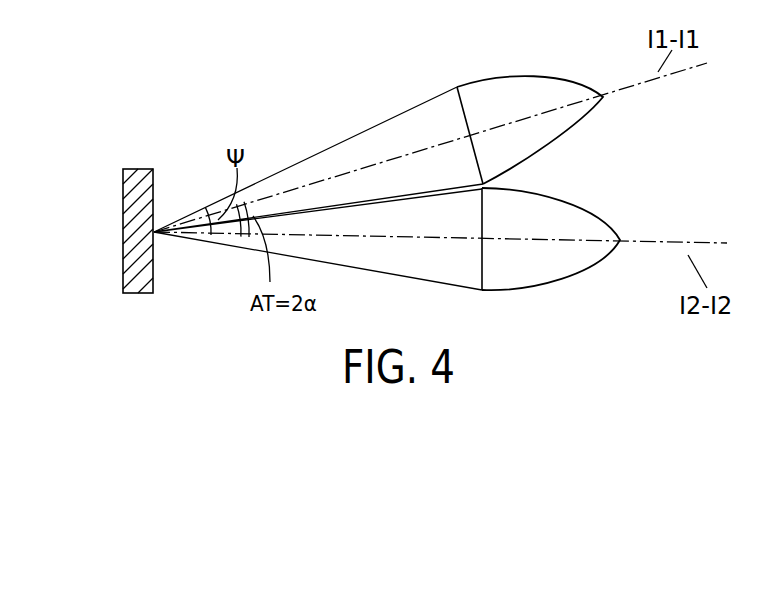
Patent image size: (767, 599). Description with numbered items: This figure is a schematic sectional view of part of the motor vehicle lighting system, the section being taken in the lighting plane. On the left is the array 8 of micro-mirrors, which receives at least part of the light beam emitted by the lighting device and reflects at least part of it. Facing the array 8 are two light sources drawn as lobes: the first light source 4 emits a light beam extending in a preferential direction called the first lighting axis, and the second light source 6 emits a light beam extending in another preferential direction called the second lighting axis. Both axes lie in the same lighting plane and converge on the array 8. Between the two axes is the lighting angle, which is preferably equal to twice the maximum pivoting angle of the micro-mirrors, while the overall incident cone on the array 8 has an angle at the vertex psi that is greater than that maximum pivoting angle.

The first light source 4 is at (522, 87).
The second light source 6 is at (545, 270).
The array of micro-mirrors 8 is at (136, 169).